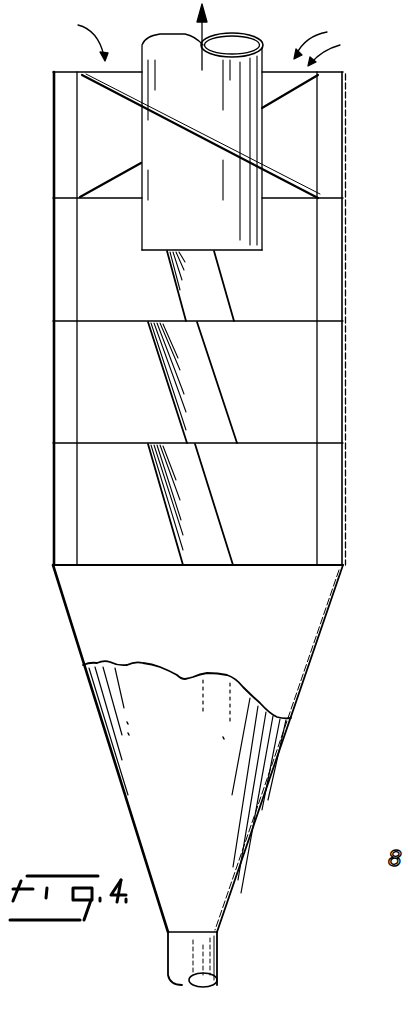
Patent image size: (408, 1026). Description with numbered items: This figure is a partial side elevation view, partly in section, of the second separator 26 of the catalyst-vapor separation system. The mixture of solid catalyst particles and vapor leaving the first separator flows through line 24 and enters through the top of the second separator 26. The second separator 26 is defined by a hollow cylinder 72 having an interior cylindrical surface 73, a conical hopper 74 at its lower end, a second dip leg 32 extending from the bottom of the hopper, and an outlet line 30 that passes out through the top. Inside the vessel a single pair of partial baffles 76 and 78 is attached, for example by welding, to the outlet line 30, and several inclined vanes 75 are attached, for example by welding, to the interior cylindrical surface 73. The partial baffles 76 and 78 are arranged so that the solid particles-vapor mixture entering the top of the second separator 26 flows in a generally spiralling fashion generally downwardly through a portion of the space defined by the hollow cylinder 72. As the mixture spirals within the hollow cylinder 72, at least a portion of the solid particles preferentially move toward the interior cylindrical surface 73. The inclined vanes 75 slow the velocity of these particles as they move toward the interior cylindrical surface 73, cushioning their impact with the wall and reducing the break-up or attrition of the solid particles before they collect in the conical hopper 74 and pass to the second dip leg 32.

The line 24 is at (331, 49).
The second separator 26 is at (349, 359).
The outlet line 30 is at (250, 147).
The second dip leg 32 is at (213, 962).
The hollow cylinder 72 is at (53, 407).
The interior cylindrical surface 73 is at (338, 426).
The conical hopper 74 is at (122, 780).
The inclined vanes 75 is at (185, 287).
The partial baffle 76 is at (128, 99).
The partial baffle 78 is at (124, 172).